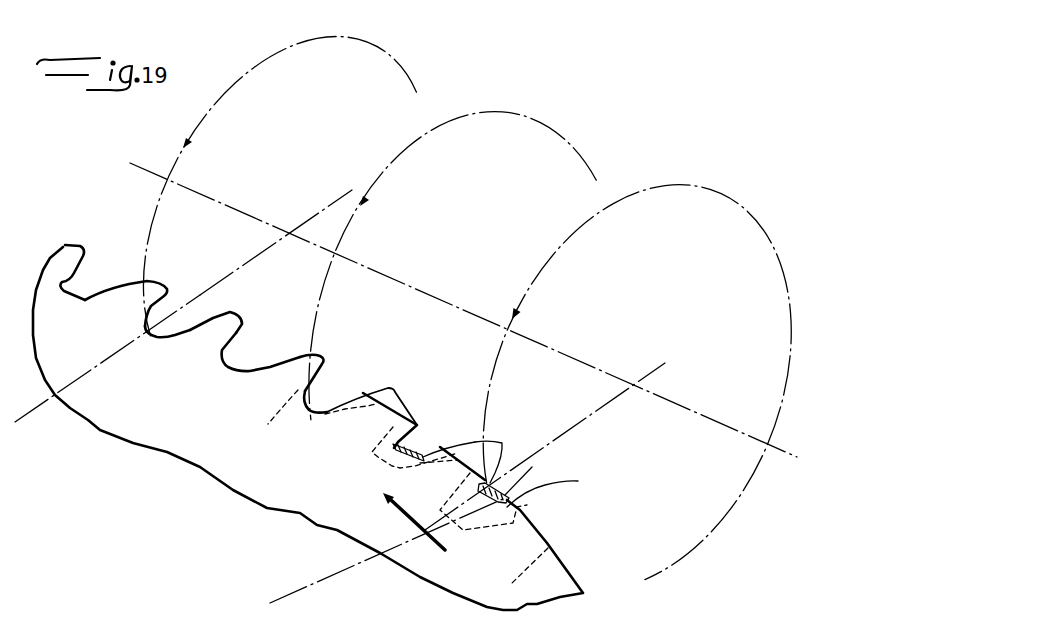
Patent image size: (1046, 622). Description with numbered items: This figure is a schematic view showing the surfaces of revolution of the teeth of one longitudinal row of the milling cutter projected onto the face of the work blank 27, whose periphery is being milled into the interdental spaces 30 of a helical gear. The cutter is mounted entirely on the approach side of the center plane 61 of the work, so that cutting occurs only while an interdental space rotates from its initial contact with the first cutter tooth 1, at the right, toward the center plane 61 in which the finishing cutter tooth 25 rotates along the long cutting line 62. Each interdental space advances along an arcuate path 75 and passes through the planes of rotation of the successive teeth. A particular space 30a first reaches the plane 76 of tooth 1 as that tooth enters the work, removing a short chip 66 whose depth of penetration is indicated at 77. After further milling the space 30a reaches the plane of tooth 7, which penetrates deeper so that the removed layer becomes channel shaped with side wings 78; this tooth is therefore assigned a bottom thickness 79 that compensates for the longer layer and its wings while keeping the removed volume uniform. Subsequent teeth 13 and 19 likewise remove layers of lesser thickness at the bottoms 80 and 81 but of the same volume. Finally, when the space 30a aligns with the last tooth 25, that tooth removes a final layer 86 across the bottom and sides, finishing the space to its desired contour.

The first cutter tooth 1 is at (557, 490).
The cutter tooth 7 is at (404, 405).
The cutter tooth 13 is at (289, 388).
The cutter tooth 19 is at (220, 345).
The finishing cutter tooth 25 is at (138, 306).
The work blank 27 is at (157, 445).
The interdental space 30 is at (86, 268).
The interdental space 30a is at (545, 508).
The center plane 61 is at (23, 415).
The cutting line 62 is at (237, 275).
The chip 66 is at (485, 462).
The arcuate path 75 is at (415, 535).
The plane of tooth 1 76 is at (590, 428).
The depth of penetration 77 is at (481, 470).
The side wings 78 is at (428, 458).
The bottom thickness 79 is at (421, 468).
The bottom of layer 80 is at (316, 413).
The bottom of layer 81 is at (236, 360).
The final layer 86 is at (130, 327).